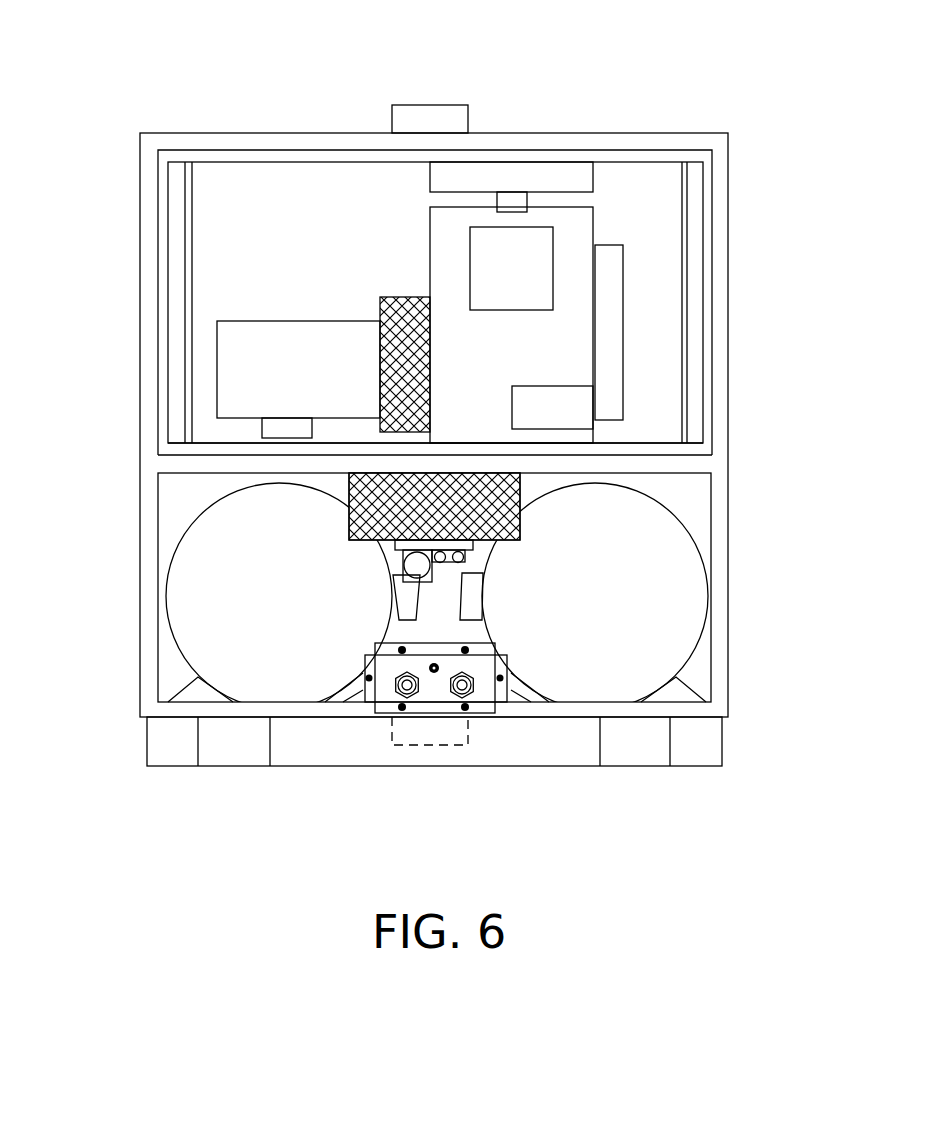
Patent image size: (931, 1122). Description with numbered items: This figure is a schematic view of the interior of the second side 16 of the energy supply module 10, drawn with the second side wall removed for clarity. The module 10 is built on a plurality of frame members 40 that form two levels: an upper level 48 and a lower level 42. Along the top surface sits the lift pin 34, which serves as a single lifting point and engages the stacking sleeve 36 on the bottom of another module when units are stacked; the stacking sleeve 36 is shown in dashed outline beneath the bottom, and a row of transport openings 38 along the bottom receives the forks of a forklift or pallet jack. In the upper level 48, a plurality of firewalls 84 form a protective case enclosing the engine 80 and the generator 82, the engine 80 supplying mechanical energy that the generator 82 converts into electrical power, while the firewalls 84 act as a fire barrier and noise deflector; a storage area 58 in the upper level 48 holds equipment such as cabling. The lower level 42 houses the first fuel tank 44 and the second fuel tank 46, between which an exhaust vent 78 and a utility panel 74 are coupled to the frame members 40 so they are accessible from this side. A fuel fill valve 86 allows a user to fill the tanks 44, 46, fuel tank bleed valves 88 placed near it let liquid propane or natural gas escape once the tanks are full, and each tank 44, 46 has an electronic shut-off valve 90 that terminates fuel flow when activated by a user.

The energy supply module 10 is at (156, 75).
The second side 16 is at (172, 680).
The lift pin 34 is at (412, 115).
The stacking sleeve 36 is at (425, 745).
The transport openings 38 is at (638, 748).
The frame members 40 is at (728, 248).
The lower level 42 is at (688, 493).
The first fuel tank 44 is at (294, 599).
The second fuel tank 46 is at (610, 599).
The upper level 48 is at (658, 326).
The storage area 58 is at (638, 453).
The utility panel 74 is at (370, 690).
The exhaust vent 78 is at (505, 492).
The engine 80 is at (527, 278).
The generator 82 is at (267, 335).
The firewalls 84 is at (685, 245).
The fuel fill valve 86 is at (415, 563).
The fuel tank bleed valves 88 is at (453, 563).
The electronic shut-off valve 90 is at (413, 603).